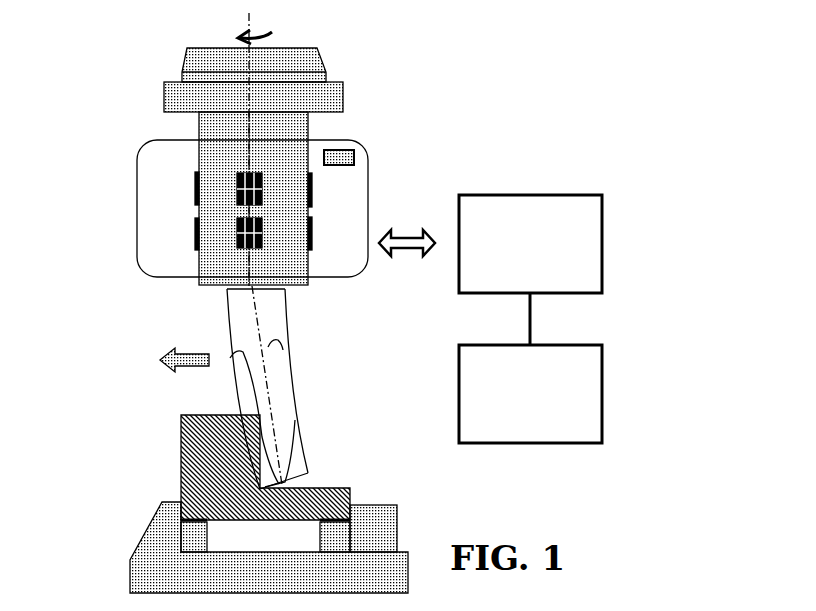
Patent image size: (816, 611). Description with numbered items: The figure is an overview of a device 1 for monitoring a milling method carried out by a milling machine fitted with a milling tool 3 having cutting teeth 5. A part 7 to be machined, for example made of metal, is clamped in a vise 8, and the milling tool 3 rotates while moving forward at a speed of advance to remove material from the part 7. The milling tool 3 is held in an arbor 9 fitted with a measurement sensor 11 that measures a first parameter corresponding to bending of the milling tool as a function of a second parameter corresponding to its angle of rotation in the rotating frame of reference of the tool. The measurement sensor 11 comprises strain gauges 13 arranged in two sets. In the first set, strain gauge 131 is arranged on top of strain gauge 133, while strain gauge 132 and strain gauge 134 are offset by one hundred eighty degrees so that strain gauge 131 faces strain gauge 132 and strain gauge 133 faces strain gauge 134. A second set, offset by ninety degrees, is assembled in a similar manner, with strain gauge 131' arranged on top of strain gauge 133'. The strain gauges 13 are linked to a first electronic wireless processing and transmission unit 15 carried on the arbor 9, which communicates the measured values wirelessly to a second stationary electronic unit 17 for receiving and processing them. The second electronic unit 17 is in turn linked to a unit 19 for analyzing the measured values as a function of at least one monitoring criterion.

The device for monitoring a milling method 1 is at (682, 165).
The milling tool 3 is at (128, 328).
The cutting teeth 5 is at (312, 430).
The part to be machined 7 is at (181, 453).
The vise 8 is at (158, 540).
The arbor 9 is at (309, 130).
The measurement sensor 11 is at (136, 186).
The strain gauges 13 is at (156, 217).
The first strain gauge of the first set 131 is at (144, 165).
The first strain gauge of the second set 131' is at (189, 141).
The second strain gauge of the first set 132 is at (313, 187).
The first strain gauge of the first set 133 is at (148, 248).
The first strain gauge of the second set 133' is at (332, 290).
The second strain gauge of the first set 134 is at (258, 235).
The first electronic wireless processing and transmission unit 15 is at (354, 150).
The second stationary electronic unit 17 is at (530, 244).
The unit for analyzing the measured values 19 is at (530, 394).